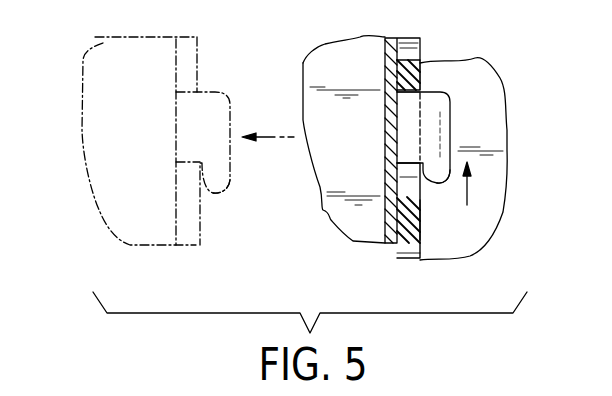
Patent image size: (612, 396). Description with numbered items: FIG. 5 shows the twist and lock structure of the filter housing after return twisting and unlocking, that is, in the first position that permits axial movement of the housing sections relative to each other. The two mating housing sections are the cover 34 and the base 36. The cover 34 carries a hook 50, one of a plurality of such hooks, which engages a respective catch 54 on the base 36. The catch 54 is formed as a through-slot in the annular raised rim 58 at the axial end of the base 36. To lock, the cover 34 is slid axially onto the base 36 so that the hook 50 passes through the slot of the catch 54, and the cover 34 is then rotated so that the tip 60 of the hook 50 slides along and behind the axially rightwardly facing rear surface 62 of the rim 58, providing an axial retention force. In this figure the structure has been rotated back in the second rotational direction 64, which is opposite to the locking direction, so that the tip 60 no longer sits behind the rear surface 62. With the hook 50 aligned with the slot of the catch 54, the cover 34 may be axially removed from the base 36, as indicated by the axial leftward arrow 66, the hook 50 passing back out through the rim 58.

The cover 34 is at (103, 43).
The base 36 is at (465, 78).
The hook 50 is at (222, 91).
The catch 54 is at (407, 193).
The annular raised rim 58 is at (407, 228).
The tip 60 is at (210, 193).
The rear surface 62 is at (438, 186).
The second rotational direction 64 is at (468, 188).
The axial leftward arrow 66 is at (272, 137).